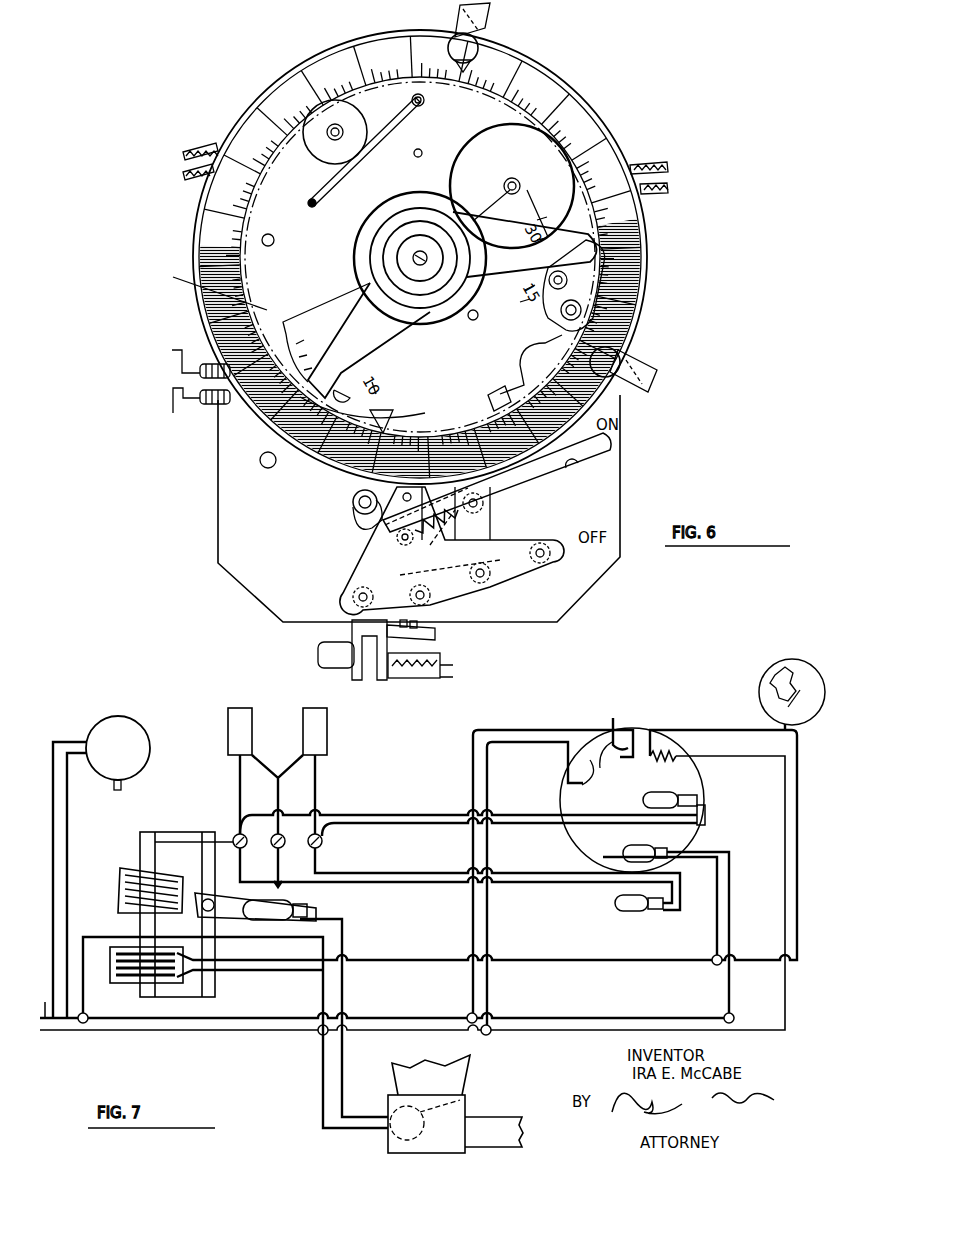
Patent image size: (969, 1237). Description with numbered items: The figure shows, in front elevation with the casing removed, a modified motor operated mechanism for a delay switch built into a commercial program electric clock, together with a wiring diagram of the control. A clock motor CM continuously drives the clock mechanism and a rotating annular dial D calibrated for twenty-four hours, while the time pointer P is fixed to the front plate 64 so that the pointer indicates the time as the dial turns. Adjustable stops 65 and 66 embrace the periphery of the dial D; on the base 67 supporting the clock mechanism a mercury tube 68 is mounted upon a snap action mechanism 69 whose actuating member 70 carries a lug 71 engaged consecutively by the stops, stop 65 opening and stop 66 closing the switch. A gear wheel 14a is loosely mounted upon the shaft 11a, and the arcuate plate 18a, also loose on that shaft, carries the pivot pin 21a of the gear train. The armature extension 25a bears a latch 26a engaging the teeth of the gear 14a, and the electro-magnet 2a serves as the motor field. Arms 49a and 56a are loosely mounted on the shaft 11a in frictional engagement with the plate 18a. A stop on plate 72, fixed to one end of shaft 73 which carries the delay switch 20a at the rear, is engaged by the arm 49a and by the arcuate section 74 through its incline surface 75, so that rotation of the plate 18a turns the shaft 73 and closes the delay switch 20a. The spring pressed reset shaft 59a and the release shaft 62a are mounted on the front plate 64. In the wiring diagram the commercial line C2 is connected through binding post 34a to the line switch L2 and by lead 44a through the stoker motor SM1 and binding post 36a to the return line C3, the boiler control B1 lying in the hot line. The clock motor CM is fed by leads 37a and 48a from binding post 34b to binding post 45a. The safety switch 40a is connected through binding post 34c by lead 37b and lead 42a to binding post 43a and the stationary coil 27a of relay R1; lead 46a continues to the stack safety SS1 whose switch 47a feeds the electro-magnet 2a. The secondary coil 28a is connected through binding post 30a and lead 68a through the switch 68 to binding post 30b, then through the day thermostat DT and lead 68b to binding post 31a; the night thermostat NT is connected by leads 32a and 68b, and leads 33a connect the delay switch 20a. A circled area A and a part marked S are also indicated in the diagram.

In FIG. 6, the annular dial D is at (572, 107).
In FIG. 6, the adjustable stop 66 is at (482, 32).
In FIG. 6, the adjustable stop 65 is at (658, 367).
In FIG. 6, the lead 37a is at (195, 149).
In FIG. 7, the lead 37a is at (472, 923).
In FIG. 6, the lead 48a is at (195, 177).
In FIG. 7, the lead 48a is at (488, 935).
In FIG. 6, the lead 46a is at (668, 195).
In FIG. 7, the lead 46a is at (725, 730).
In FIG. 6, the shaft 11a is at (412, 260).
In FIG. 6, the gear wheel 14a is at (360, 235).
In FIG. 6, the arm 49a is at (541, 248).
In FIG. 6, the shaft 73 is at (565, 332).
In FIG. 6, the plate 72 is at (552, 313).
In FIG. 6, the incline surface 75 is at (517, 355).
In FIG. 6, the arcuate section 74 is at (488, 395).
In FIG. 6, the time pointer P is at (400, 427).
In FIG. 6, the extension 25a is at (388, 135).
In FIG. 6, the latch 26a is at (317, 203).
In FIG. 6, the pivot pin 21a is at (471, 320).
In FIG. 6, the arm 56a is at (345, 370).
In FIG. 6, the arcuate plate 18a is at (343, 305).
In FIG. 6, the front plate 64 is at (208, 291).
In FIG. 6, the release shaft 62a is at (172, 358).
In FIG. 6, the reset shaft 59a is at (173, 400).
In FIG. 6, the base 67 is at (272, 567).
In FIG. 6, the lug 71 is at (352, 500).
In FIG. 6, the actuating member 70 is at (367, 527).
In FIG. 6, the snap action mechanism 69 is at (377, 563).
In FIG. 6, the mercury tube switch 68 is at (333, 652).
In FIG. 7, the mercury tube switch 68 is at (633, 909).
In FIG. 7, the boiler control B1 is at (118, 740).
In FIG. 7, the commercial line C2 is at (44, 998).
In FIG. 7, the return commercial line C3 is at (87, 1032).
In FIG. 7, the binding post 34a is at (87, 1015).
In FIG. 7, the binding post 34b is at (469, 1014).
In FIG. 7, the binding post 34c is at (725, 1014).
In FIG. 7, the binding post 36a is at (320, 1034).
In FIG. 7, the binding post 45a is at (489, 1034).
In FIG. 7, the electro-magnet 2a is at (658, 750).
In FIG. 7, the stationary coil 27a is at (145, 978).
In FIG. 7, the lead 44a is at (342, 1057).
In FIG. 7, the binding post 43a is at (714, 963).
In FIG. 7, the clock motor CM is at (613, 727).
In FIG. 7, the night thermostat NT is at (228, 735).
In FIG. 7, the day thermostat DT is at (327, 742).
In FIG. 7, the lead 32a is at (238, 785).
In FIG. 7, the lead 68b is at (280, 793).
In FIG. 7, the binding post 30a is at (235, 835).
In FIG. 7, the binding post 31a is at (276, 848).
In FIG. 7, the binding post 30b is at (323, 843).
In FIG. 7, the leads 33a is at (390, 815).
In FIG. 7, the lead 68a is at (402, 872).
In FIG. 7, the lead 37b is at (728, 880).
In FIG. 7, the safety switch 40a is at (623, 853).
In FIG. 7, the delay switch 20a is at (663, 797).
In FIG. 7, the lead 42a is at (716, 940).
In FIG. 7, the contact assembly A is at (573, 797).
In FIG. 7, the stack safety SS1 is at (768, 672).
In FIG. 7, the stack safety switch 47a is at (800, 690).
In FIG. 7, the relay R1 is at (153, 837).
In FIG. 7, the secondary coil 28a is at (123, 872).
In FIG. 7, the line switch L2 is at (263, 910).
In FIG. 7, the stoker motor SM1 is at (465, 1100).
In FIG. 7, the stoker S is at (431, 1075).